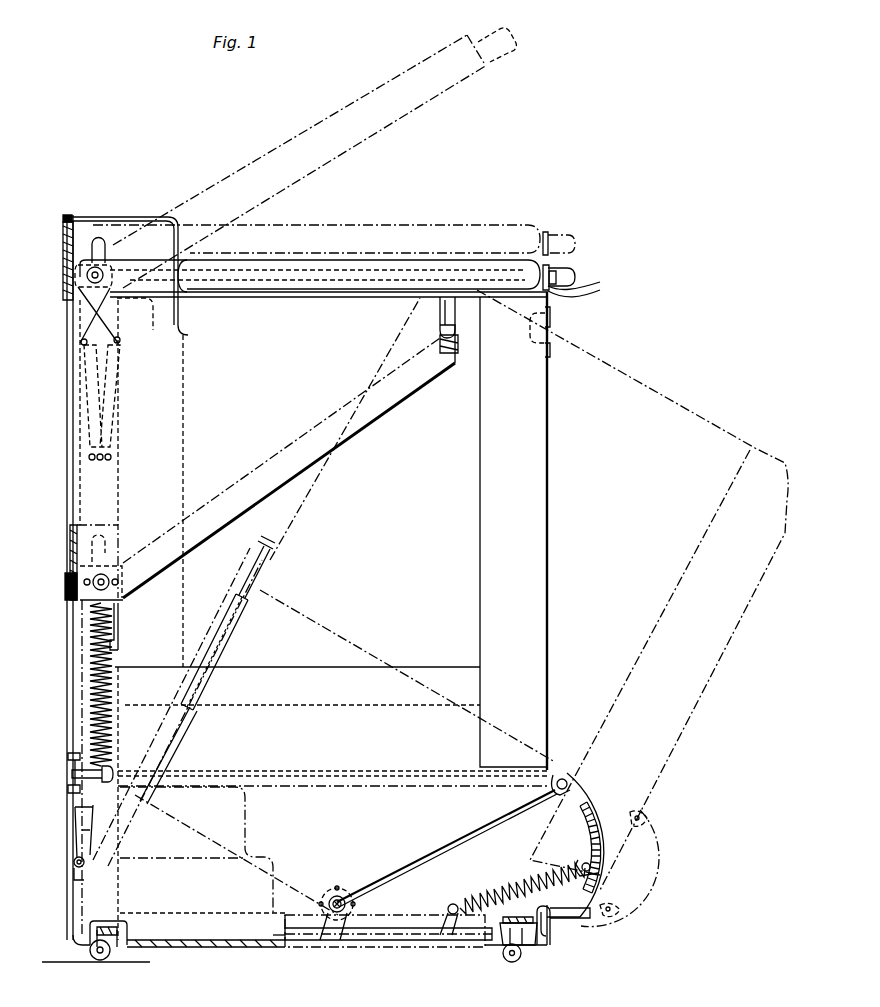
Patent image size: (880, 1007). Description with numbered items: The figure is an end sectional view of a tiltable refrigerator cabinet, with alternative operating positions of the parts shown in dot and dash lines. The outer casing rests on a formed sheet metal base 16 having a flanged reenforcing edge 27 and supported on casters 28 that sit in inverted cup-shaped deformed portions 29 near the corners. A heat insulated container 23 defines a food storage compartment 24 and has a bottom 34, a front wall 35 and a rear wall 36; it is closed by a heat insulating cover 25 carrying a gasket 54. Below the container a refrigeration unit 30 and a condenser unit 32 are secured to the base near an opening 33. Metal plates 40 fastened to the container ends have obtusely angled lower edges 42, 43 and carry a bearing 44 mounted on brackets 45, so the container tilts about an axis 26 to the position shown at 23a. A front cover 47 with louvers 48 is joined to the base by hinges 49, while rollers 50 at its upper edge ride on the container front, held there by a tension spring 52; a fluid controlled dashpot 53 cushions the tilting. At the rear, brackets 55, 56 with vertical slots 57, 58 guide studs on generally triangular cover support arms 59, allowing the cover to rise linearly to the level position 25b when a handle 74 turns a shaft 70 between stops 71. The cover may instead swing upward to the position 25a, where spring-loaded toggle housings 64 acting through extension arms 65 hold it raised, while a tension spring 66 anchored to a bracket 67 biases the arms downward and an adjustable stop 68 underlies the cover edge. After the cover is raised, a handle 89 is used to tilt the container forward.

The base 16 is at (212, 947).
The heat insulated container 23 is at (555, 540).
The heat insulated container in tilted position 23a is at (738, 610).
The refrigerated food storage compartment 24 is at (192, 445).
The cover 25 is at (395, 260).
The cover in upwardly swung position 25a is at (402, 130).
The cover in raised linear position 25b is at (487, 226).
The axis 26 is at (345, 895).
The flanged reenforcing edge 27 is at (75, 930).
The casters 28 is at (108, 958).
The inverted cup-shaped deformed portions 29 is at (95, 940).
The refrigeration unit 30 is at (250, 838).
The condenser unit 32 is at (440, 905).
The opening 33 is at (410, 938).
The bottom 34 is at (318, 705).
The front wall 35 is at (535, 455).
The rear wall 36 is at (185, 478).
The metal plates 40 is at (460, 835).
The lower edge 42 is at (182, 940).
The lower edge 43 is at (488, 812).
The bearing 44 is at (333, 888).
The brackets 45 is at (325, 938).
The cover 47 is at (587, 790).
The louvers 48 is at (598, 830).
The hinges 49 is at (565, 925).
The rollers 50 is at (562, 777).
The tension spring 52 is at (515, 892).
The fluid controlled dashpot 53 is at (85, 805).
The gasket 54 is at (580, 292).
The bracket 55 is at (85, 228).
The bracket 56 is at (70, 596).
The slot 57 is at (103, 240).
The slot 58 is at (92, 552).
The cover support arms 59 is at (345, 437).
The housing 64 is at (85, 398).
The extension arm 65 is at (84, 322).
The tension spring 66 is at (95, 662).
The bracket 67 is at (88, 770).
The adjustable stop 68 is at (440, 320).
The shaft 70 is at (270, 262).
The stops 71 is at (513, 52).
The handle 74 is at (575, 276).
The handle 89 is at (552, 330).